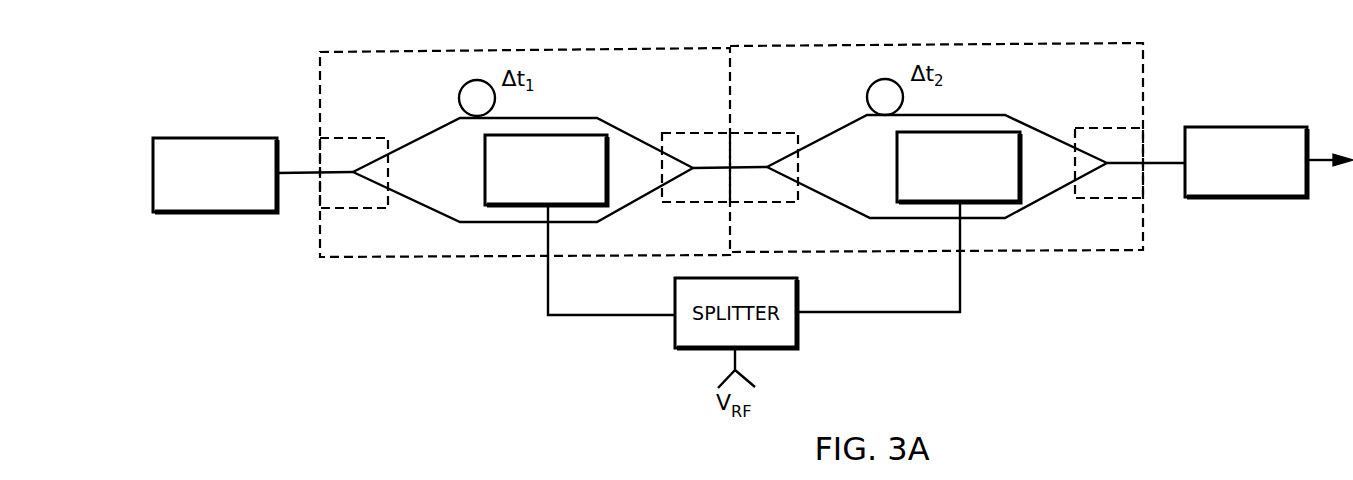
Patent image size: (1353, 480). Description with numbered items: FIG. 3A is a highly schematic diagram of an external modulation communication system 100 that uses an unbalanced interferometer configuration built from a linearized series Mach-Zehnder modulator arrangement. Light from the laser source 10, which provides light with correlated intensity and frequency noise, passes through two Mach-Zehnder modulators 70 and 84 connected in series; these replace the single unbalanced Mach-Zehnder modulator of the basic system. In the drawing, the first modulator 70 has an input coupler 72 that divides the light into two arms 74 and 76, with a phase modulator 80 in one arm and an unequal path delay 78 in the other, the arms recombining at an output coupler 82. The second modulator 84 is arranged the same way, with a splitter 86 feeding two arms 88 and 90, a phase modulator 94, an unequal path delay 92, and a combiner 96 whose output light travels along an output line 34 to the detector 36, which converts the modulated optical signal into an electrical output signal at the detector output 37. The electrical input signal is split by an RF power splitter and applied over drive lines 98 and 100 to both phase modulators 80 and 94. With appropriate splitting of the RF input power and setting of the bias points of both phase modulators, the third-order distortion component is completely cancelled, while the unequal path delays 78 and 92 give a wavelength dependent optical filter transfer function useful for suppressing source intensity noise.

The laser source 10 is at (216, 137).
The output optical line 34 is at (1174, 165).
The detector 36 is at (1245, 126).
The detector output 37 is at (1320, 158).
The Mach-Zehnder modulator 70 is at (371, 51).
The first optical splitter 72 is at (371, 137).
The first upper arm 74 is at (447, 125).
The first lower arm 76 is at (448, 221).
The unequal path delay 78 is at (460, 92).
The phase modulator 80 is at (485, 172).
The first optical combiner 82 is at (680, 132).
The Mach-Zehnder modulator 84 is at (780, 45).
The second optical splitter 86 is at (781, 132).
The second upper arm 88 is at (859, 120).
The second lower arm 90 is at (861, 218).
The unequal path delay 92 is at (867, 90).
The phase modulator 94 is at (897, 168).
The RF power splitter 96 is at (1094, 127).
The first RF drive line 98 is at (612, 314).
The external modulation communication system 100 is at (880, 311).